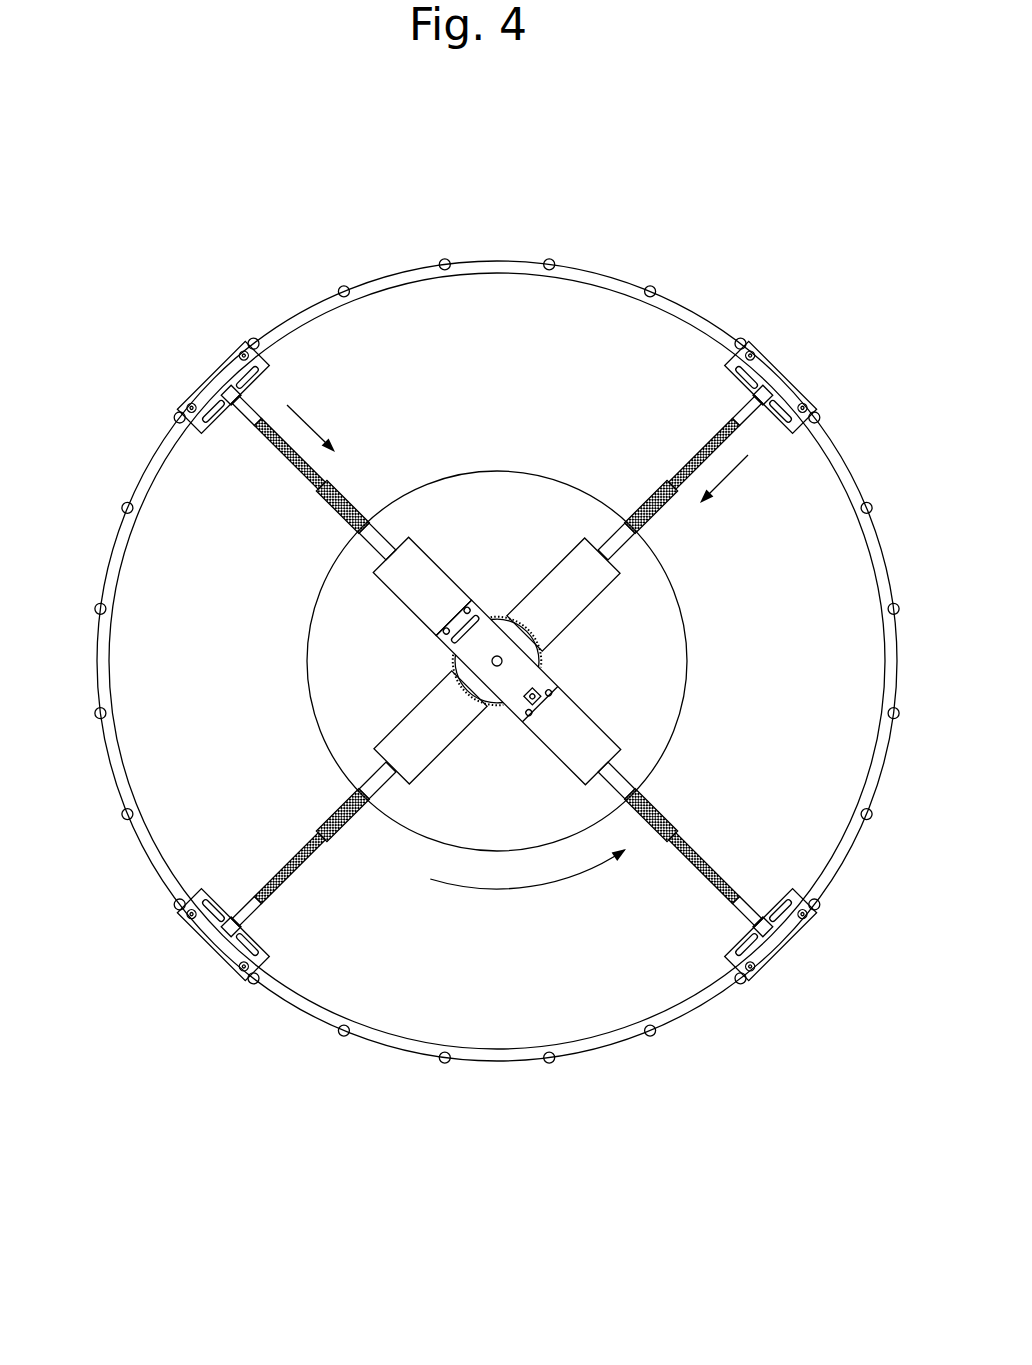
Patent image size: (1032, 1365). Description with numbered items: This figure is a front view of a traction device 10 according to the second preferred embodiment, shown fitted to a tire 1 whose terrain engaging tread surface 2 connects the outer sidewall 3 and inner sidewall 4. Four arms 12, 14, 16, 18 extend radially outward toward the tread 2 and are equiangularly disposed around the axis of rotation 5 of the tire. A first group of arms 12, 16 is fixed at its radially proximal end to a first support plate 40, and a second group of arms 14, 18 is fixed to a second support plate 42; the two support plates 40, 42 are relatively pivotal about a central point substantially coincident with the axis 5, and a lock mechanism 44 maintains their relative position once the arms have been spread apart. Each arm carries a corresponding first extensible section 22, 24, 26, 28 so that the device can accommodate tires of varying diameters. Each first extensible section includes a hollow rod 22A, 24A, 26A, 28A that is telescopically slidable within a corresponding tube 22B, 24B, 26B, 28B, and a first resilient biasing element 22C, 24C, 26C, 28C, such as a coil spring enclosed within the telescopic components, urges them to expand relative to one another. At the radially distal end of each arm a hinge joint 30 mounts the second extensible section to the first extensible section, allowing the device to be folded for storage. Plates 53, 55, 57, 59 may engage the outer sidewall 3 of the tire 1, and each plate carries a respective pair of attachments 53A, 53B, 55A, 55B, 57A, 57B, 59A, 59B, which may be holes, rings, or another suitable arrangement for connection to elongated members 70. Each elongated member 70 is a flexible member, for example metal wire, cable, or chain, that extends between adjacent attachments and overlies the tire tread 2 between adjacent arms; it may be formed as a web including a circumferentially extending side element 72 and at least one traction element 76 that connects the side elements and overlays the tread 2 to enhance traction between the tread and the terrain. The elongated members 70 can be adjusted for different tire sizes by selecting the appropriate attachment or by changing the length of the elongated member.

The tire 1 is at (522, 247).
The tread surface 2 is at (557, 297).
The outer sidewall 3 is at (585, 273).
The inner sidewall 4 is at (617, 308).
The axis of rotation 5 is at (497, 652).
The traction device 10 is at (493, 718).
The arm 12 is at (237, 307).
The arm 14 is at (829, 335).
The arm 16 is at (737, 1018).
The arm 18 is at (175, 985).
The first extensible section 22 is at (190, 548).
The hollow rod 22A is at (275, 455).
The tube 22B is at (333, 513).
The first resilient biasing element 22C is at (258, 432).
The first extensible section 24 is at (581, 388).
The hollow rod 24A is at (698, 457).
The tube 24B is at (670, 487).
The first resilient biasing element 24C is at (710, 425).
The first extensible section 26 is at (790, 760).
The hollow rod 26A is at (710, 860).
The tube 26B is at (672, 810).
The first resilient biasing element 26C is at (661, 803).
The first extensible section 28 is at (181, 750).
The hollow rod 28A is at (297, 840).
The tube 28B is at (313, 818).
The first resilient biasing element 28C is at (247, 887).
The hinge joint 30 is at (268, 382).
The first support plate 40 is at (389, 583).
The second support plate 42 is at (397, 723).
The lock mechanism 44 is at (551, 683).
The plate 53 is at (222, 366).
The attachment 53A is at (246, 340).
The attachment 53B is at (185, 405).
The plate 55 is at (796, 393).
The attachment 55A is at (815, 420).
The attachment 55B is at (746, 350).
The plate 57 is at (808, 930).
The attachment 57A is at (743, 990).
The attachment 57B is at (822, 900).
The plate 59 is at (232, 960).
The attachment 59A is at (172, 903).
The attachment 59B is at (253, 985).
The elongated member 70 is at (763, 553).
The side element 72 is at (886, 568).
The traction element 76 is at (852, 532).